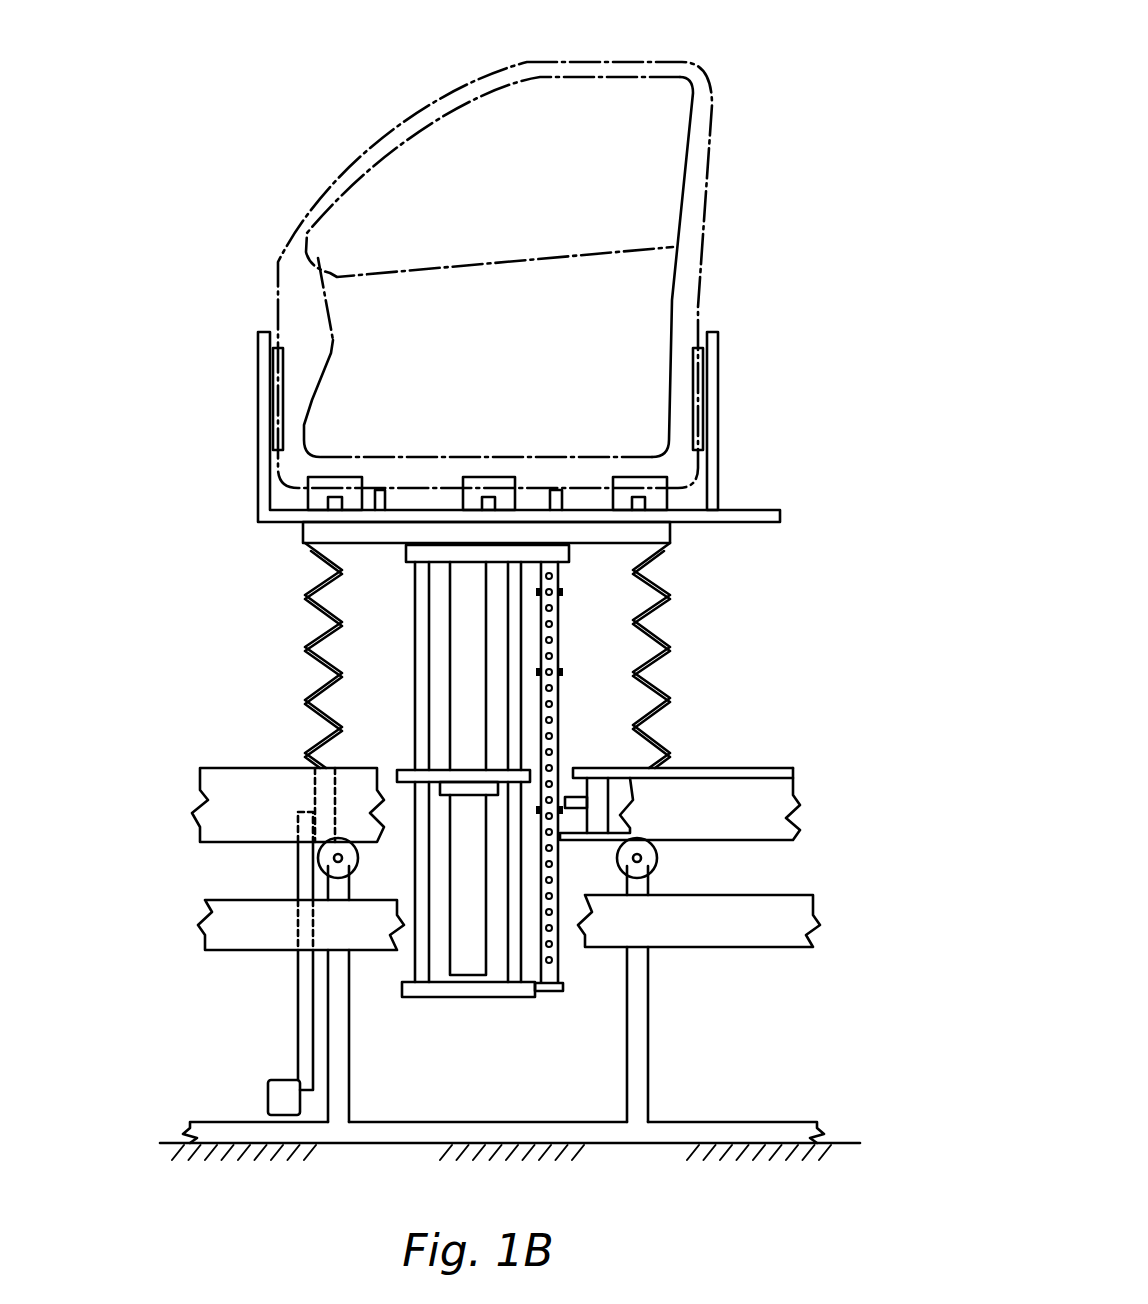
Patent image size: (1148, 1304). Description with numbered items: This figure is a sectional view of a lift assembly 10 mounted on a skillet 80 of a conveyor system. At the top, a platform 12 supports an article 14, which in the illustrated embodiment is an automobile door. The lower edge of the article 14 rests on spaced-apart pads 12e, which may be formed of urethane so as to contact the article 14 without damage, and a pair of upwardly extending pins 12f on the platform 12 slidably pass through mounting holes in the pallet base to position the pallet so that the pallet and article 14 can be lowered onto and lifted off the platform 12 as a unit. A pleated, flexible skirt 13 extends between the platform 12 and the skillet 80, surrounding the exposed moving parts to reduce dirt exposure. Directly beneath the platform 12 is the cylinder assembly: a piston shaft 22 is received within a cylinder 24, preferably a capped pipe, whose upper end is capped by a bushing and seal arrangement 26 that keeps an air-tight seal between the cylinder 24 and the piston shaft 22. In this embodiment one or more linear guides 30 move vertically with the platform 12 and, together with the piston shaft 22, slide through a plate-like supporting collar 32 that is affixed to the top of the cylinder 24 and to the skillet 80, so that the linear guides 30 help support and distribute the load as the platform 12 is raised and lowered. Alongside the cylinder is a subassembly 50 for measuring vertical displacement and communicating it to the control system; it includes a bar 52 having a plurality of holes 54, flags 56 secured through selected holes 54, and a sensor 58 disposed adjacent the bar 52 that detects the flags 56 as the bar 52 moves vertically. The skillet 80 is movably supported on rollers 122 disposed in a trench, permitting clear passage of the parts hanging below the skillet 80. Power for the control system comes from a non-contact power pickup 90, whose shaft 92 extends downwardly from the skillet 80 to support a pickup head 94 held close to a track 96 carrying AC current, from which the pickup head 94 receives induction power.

The lift assembly 10 is at (792, 110).
The article 14 is at (378, 132).
The platform 12 is at (362, 535).
The pads 12e is at (485, 476).
The upwardly extending pins 12f is at (563, 498).
The pleated flexible skirt 13 is at (318, 624).
The linear guides 30 is at (417, 640).
The piston shaft 22 is at (463, 693).
The cylinder 24 is at (475, 945).
The supporting collar 32 is at (407, 773).
The bushing and seal arrangement 26 is at (470, 795).
The bar 52 is at (558, 616).
The holes 54 is at (553, 705).
The flags 56 is at (558, 672).
The sensor 58 is at (567, 797).
The subassembly 50 is at (745, 648).
The skillet 80 is at (778, 768).
The rollers 122 is at (657, 858).
The non-contact power pickup 90 is at (265, 1027).
The shaft 92 is at (305, 1010).
The pickup head 94 is at (278, 1100).
The track 96 is at (737, 1123).